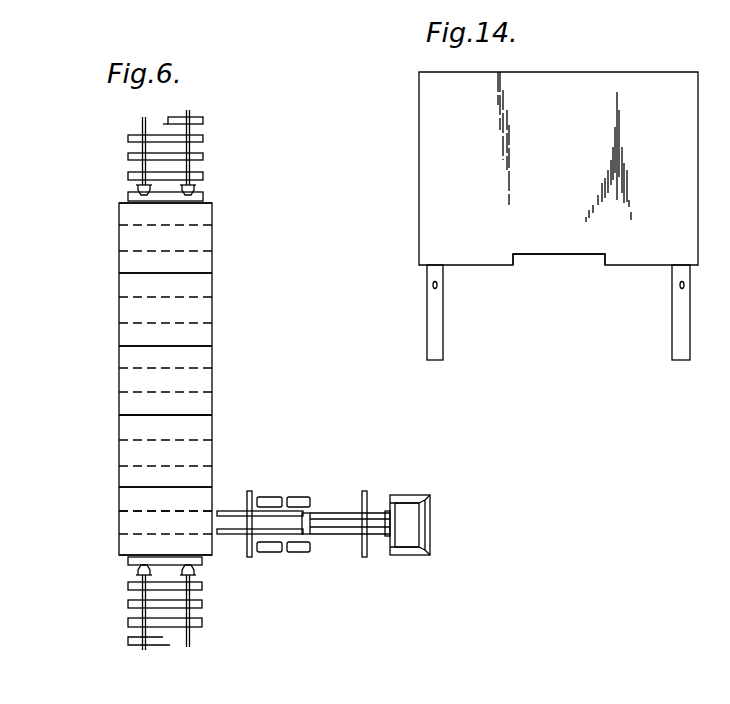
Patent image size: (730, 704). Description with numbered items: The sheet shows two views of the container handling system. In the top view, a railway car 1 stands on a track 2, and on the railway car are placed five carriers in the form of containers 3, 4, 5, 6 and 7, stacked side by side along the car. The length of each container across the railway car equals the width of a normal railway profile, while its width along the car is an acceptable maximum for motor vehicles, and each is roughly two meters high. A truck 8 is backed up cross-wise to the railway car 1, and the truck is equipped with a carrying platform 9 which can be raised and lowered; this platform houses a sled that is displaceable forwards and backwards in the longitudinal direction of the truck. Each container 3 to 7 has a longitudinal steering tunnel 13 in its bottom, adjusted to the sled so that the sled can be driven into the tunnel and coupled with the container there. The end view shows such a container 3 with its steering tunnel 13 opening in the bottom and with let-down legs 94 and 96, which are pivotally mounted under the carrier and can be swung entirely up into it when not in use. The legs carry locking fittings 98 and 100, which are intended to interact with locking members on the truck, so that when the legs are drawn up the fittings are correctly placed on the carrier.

In FIG. 6, the railway car 1 is at (130, 562).
In FIG. 6, the track 2 is at (145, 612).
In FIG. 6, the container 3 is at (206, 545).
In FIG. 14, the container 3 is at (540, 82).
In FIG. 6, the container 4 is at (122, 475).
In FIG. 6, the container 5 is at (206, 362).
In FIG. 6, the container 6 is at (122, 285).
In FIG. 6, the container 7 is at (203, 215).
In FIG. 6, the truck 8 is at (400, 495).
In FIG. 6, the carrying platform 9 is at (338, 512).
In FIG. 6, the steering tunnel 13 is at (145, 518).
In FIG. 14, the steering tunnel 13 is at (550, 255).
In FIG. 14, the leg 94 is at (435, 348).
In FIG. 14, the leg 96 is at (682, 335).
In FIG. 14, the locking fitting 98 is at (439, 285).
In FIG. 14, the locking fitting 100 is at (680, 285).